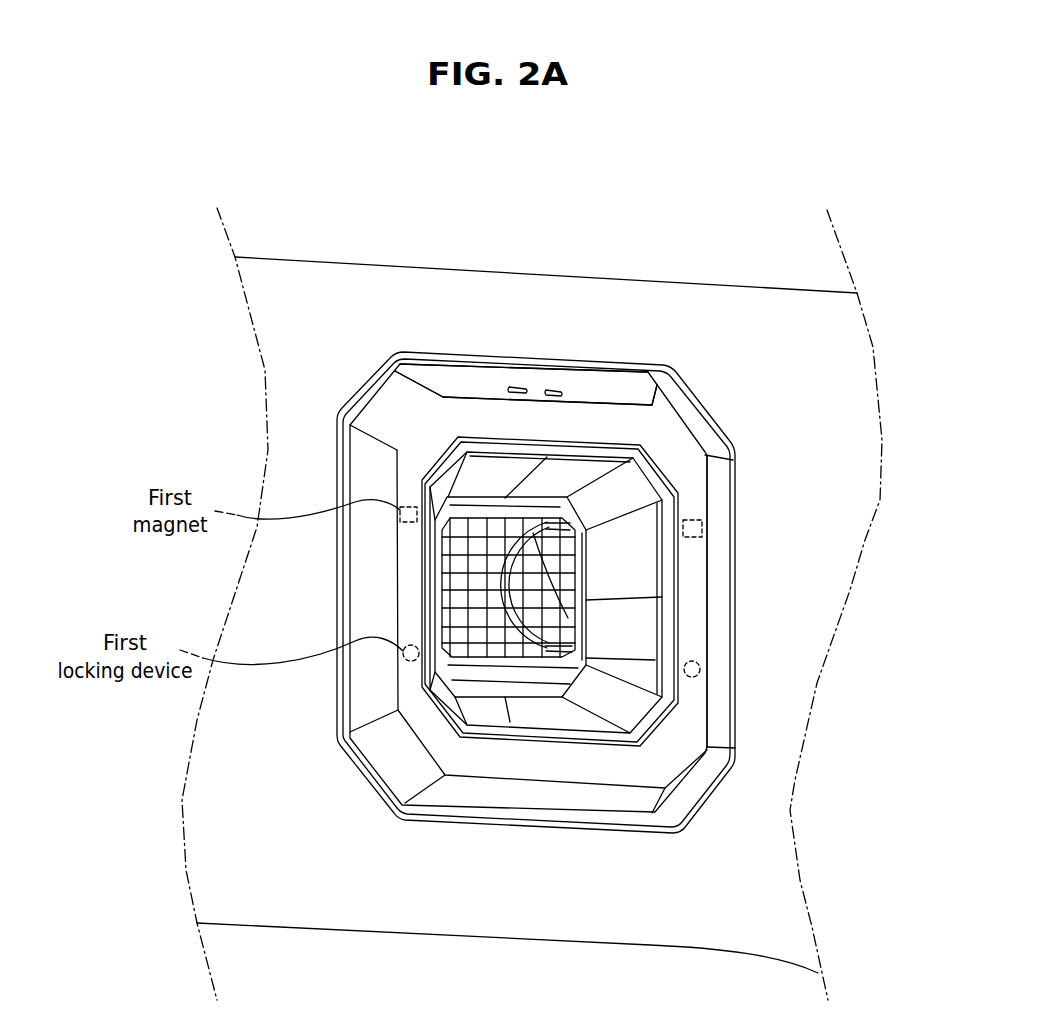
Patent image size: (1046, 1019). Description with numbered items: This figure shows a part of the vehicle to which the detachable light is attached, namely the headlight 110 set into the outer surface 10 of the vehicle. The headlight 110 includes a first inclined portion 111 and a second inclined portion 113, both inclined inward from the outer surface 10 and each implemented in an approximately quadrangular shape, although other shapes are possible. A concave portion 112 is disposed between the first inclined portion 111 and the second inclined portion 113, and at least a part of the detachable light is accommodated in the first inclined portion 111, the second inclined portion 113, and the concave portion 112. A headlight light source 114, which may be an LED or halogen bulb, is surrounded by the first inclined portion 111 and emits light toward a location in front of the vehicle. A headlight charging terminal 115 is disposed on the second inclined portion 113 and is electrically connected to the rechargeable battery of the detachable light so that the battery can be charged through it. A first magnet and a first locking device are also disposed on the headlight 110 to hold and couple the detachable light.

The outer surface 10 is at (303, 292).
The headlight 110 is at (744, 398).
The first inclined portion 111 is at (637, 647).
The concave portion 112 is at (692, 578).
The second inclined portion 113 is at (600, 392).
The headlight light source 114 is at (650, 668).
The headlight charging terminal 115 is at (553, 388).